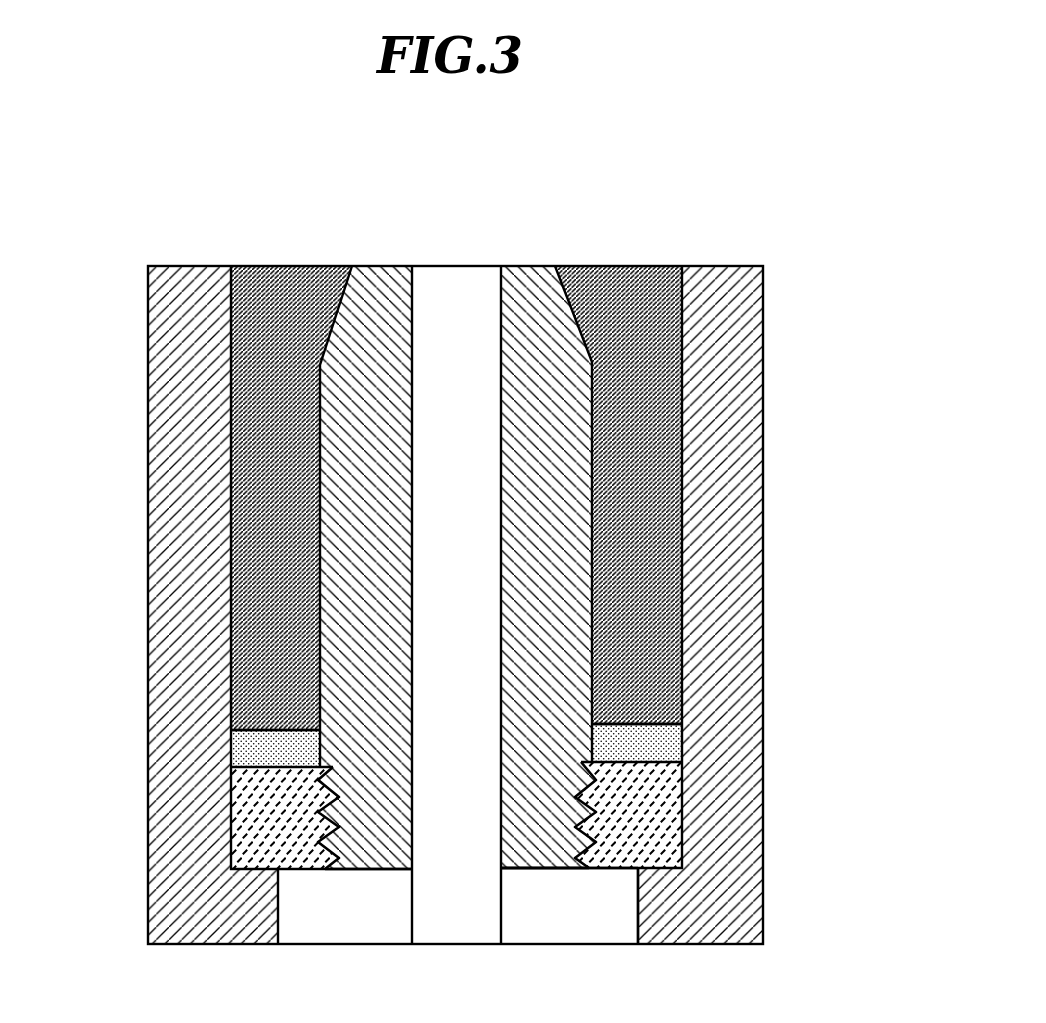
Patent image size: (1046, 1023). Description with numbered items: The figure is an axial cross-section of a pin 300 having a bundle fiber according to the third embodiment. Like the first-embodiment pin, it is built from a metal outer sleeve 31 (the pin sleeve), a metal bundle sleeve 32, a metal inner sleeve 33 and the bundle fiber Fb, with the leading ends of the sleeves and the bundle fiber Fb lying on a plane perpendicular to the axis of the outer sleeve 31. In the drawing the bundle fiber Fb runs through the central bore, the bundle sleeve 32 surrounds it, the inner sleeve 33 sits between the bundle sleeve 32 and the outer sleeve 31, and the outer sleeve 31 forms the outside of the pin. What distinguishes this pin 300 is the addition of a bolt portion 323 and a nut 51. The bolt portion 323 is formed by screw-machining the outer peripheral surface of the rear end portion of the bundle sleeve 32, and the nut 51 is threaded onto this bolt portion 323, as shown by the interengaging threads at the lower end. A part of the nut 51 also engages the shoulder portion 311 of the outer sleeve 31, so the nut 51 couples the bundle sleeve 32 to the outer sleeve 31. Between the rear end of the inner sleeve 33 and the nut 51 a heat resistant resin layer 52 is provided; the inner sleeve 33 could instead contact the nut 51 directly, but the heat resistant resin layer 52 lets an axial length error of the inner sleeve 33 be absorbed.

The pin having a bundle fiber 300 is at (127, 570).
The outer sleeve 31 is at (725, 418).
The shoulder portion 311 is at (662, 872).
The bundle sleeve 32 is at (553, 625).
The bolt portion 323 is at (548, 828).
The inner sleeve 33 is at (648, 457).
The bundle fiber Fb is at (470, 498).
The nut 51 is at (290, 852).
The heat resistant resin layer 52 is at (262, 745).